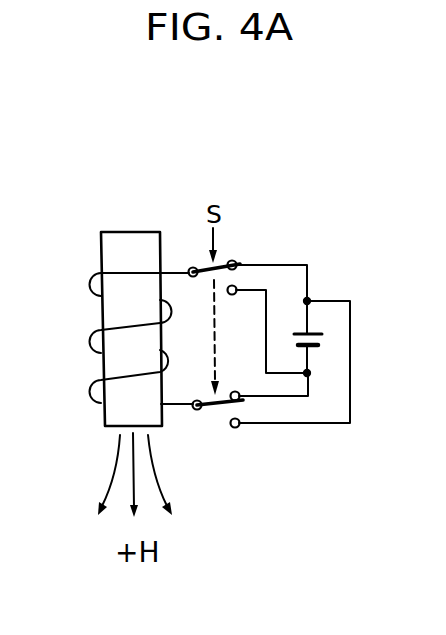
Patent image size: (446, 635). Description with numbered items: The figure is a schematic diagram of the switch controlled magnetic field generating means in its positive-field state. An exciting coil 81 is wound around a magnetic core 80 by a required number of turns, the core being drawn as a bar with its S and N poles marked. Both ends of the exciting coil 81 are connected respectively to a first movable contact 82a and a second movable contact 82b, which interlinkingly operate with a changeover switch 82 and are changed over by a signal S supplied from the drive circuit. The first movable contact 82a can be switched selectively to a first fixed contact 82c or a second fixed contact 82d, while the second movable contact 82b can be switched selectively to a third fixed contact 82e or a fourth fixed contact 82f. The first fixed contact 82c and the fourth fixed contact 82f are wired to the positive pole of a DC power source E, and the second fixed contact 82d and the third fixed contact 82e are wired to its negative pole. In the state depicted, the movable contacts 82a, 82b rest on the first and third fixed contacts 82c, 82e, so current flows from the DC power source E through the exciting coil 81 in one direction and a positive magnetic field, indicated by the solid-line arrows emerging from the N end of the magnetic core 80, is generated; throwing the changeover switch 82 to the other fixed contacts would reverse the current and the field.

The magnetic core 80 is at (113, 250).
The exciting coil 81 is at (90, 351).
The changeover switch 82 is at (229, 260).
The first movable contact 82a is at (192, 267).
The second movable contact 82b is at (202, 409).
The first fixed contact 82c is at (237, 261).
The second fixed contact 82d is at (236, 297).
The third fixed contact 82e is at (231, 391).
The fourth fixed contact 82f is at (239, 428).
The DC power source E is at (313, 352).